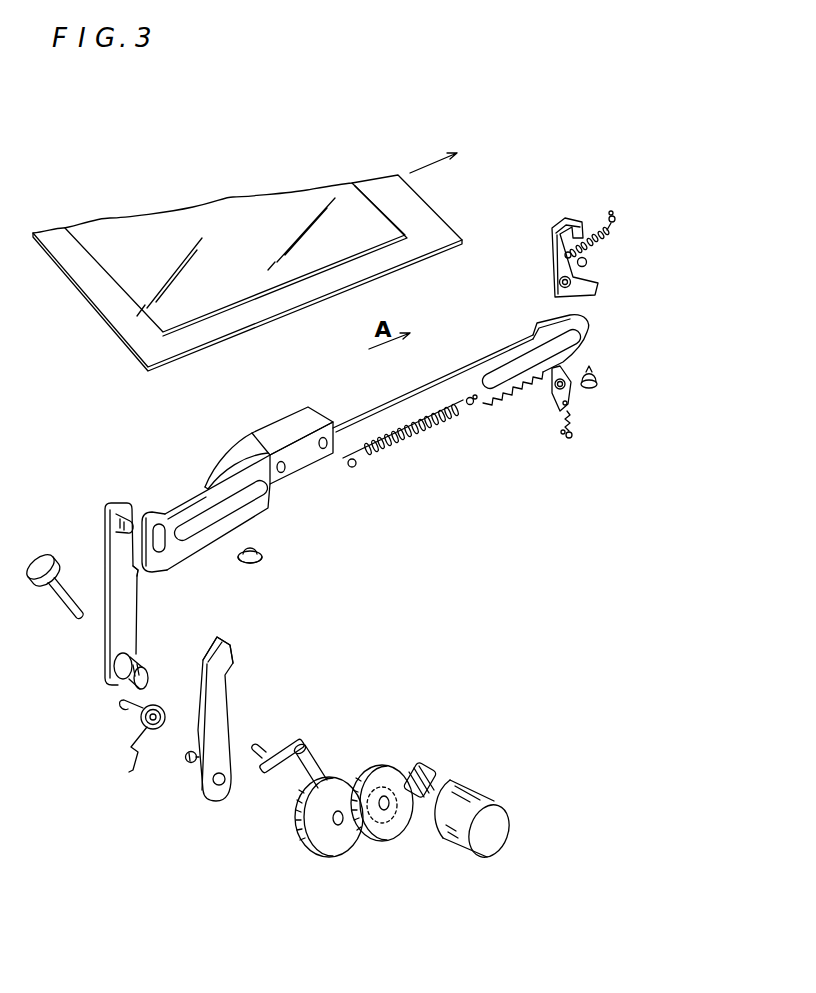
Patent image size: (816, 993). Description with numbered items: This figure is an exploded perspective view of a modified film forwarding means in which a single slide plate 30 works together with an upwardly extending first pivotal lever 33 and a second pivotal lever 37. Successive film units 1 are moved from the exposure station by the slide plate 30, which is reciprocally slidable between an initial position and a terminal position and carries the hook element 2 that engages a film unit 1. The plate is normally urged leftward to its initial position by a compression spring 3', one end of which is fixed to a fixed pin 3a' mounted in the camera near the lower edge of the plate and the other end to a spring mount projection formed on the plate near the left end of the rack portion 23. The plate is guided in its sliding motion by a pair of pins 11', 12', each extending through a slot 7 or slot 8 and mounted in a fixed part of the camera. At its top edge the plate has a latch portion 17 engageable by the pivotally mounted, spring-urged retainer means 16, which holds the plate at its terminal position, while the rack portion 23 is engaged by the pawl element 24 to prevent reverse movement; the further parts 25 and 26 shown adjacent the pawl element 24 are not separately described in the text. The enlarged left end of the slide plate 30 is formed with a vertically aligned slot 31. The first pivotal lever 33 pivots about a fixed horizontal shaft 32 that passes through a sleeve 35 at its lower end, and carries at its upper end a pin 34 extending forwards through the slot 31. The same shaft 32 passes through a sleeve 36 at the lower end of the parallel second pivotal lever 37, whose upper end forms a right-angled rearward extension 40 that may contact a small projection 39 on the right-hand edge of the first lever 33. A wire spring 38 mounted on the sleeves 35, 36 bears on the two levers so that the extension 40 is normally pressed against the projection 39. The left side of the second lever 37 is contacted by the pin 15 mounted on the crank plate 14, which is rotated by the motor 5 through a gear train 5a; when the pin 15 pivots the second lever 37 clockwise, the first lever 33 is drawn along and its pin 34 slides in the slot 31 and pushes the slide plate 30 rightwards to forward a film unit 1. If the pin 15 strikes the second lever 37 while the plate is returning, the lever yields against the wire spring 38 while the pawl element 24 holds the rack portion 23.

The film unit 1 is at (380, 183).
The hook element 2 is at (275, 430).
The compression spring 3' is at (412, 465).
The fixed pin 3a' is at (381, 505).
The motor 5 is at (443, 822).
The gear train 5a is at (338, 825).
The slot 7 is at (264, 508).
The slot 8 is at (498, 373).
The pin 11' is at (282, 569).
The pin 12' is at (634, 366).
The crank plate 14 is at (310, 753).
The pin 15 is at (263, 745).
The retainer means 16 is at (597, 283).
The latch portion 17 is at (535, 333).
The rack portion 23 is at (523, 393).
The pawl element 24 is at (560, 372).
The pivot hole 25 is at (570, 387).
The spring 26 is at (578, 422).
The slide plate 30 is at (378, 418).
The vertically aligned slot 31 is at (161, 525).
The fixed horizontal shaft 32 is at (55, 598).
The first pivotal lever 33 is at (115, 623).
The pin 34 is at (125, 514).
The sleeve 35 is at (124, 678).
The sleeve 36 is at (190, 760).
The second pivotal lever 37 is at (220, 717).
The wire spring 38 is at (133, 725).
The small projection 39 is at (139, 577).
The right-angled rearward extension 40 is at (230, 638).